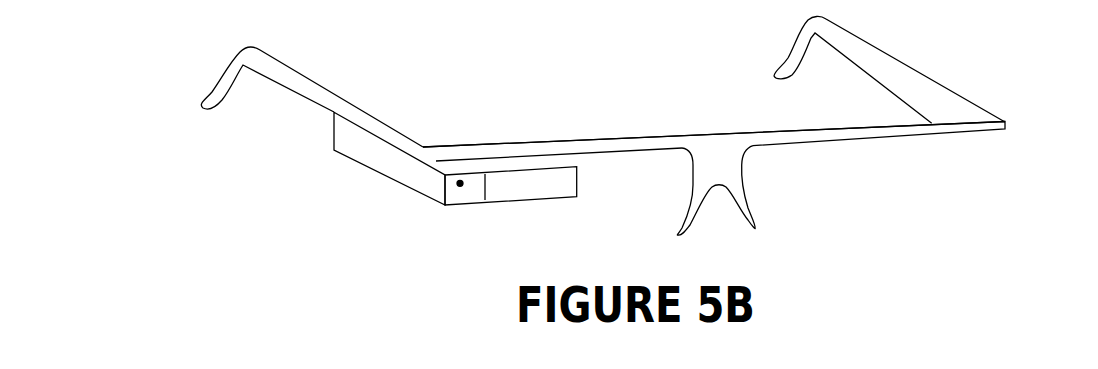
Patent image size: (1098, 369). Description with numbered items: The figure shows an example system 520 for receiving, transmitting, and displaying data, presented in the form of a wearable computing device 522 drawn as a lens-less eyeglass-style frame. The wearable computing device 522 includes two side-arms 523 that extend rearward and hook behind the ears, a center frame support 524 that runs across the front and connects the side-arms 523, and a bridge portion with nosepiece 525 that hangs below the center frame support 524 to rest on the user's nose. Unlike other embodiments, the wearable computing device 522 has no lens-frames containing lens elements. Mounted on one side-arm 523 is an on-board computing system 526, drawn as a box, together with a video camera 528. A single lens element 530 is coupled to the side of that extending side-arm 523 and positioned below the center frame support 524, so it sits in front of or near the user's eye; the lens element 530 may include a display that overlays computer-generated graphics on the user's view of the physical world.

The system 520 is at (634, 129).
The wearable computing device 522 is at (634, 125).
The side-arms 523 is at (298, 88).
The center frame support 524 is at (620, 139).
The bridge portion with nosepiece 525 is at (742, 182).
The on-board computing system 526 is at (463, 177).
The video camera 528 is at (458, 187).
The single lens element 530 is at (533, 200).